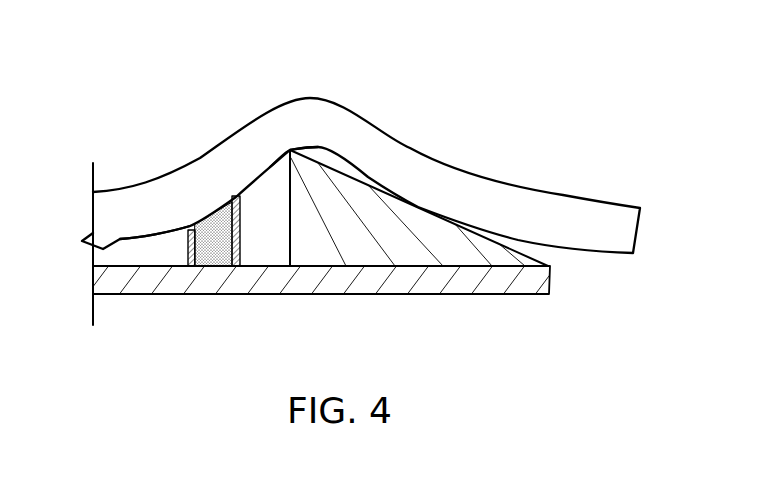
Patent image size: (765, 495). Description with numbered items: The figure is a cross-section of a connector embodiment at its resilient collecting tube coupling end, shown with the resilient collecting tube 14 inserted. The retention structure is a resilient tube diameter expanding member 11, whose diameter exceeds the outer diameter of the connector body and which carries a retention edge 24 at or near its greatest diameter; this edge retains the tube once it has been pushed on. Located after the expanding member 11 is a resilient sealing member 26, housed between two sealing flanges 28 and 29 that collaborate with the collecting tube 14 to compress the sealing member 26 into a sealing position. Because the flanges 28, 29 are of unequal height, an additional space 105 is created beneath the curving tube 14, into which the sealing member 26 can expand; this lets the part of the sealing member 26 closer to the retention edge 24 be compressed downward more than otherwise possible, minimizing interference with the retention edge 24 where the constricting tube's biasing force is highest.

The resilient tube diameter expanding member 11 is at (388, 232).
The resilient collecting tube 14 is at (385, 137).
The retention edge 24 is at (290, 150).
The sealing member 26 is at (212, 228).
The sealing flange 28 is at (237, 196).
The sealing flange 29 is at (192, 268).
The space 105 is at (172, 232).